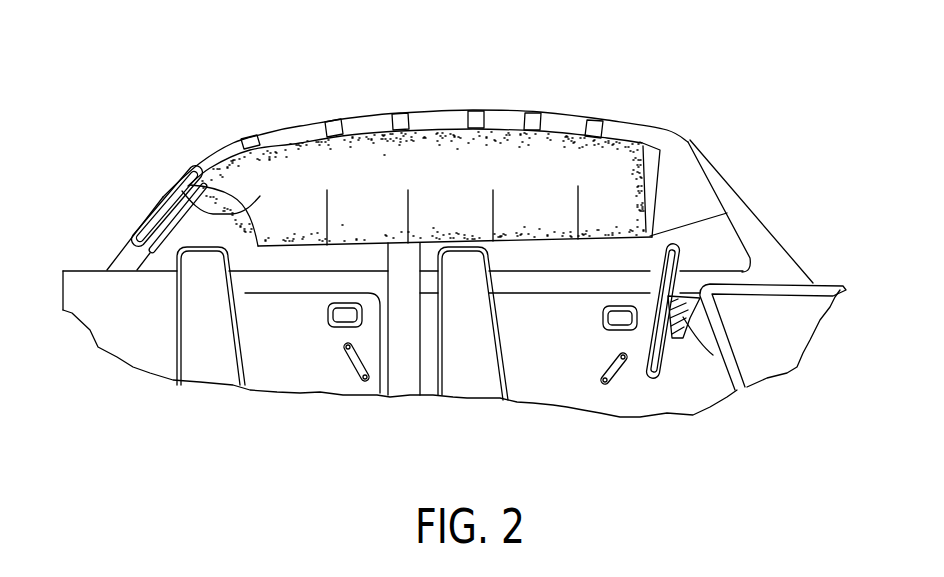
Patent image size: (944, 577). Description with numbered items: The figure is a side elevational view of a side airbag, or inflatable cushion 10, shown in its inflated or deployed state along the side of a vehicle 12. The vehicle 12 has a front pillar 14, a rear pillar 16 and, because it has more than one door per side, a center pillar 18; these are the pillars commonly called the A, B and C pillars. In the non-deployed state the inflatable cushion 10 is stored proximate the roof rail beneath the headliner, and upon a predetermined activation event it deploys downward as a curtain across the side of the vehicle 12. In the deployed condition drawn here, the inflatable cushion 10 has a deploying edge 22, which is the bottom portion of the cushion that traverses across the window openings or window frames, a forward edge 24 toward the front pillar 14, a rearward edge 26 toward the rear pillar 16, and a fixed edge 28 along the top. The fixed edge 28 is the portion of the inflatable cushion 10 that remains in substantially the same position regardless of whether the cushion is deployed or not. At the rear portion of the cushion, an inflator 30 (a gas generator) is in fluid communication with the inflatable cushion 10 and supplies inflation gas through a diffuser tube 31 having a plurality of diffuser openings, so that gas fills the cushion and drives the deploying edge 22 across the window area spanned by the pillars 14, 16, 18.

The inflatable cushion 10 is at (393, 132).
The vehicle 12 is at (828, 280).
The front pillar 14 is at (745, 223).
The rear pillar 16 is at (120, 255).
The center pillar 18 is at (402, 370).
The deploying edge 22 is at (540, 243).
The forward edge 24 is at (658, 168).
The rearward edge 26 is at (206, 207).
The fixed edge 28 is at (495, 111).
The inflator 30 is at (142, 216).
The diffuser tube 31 is at (168, 198).